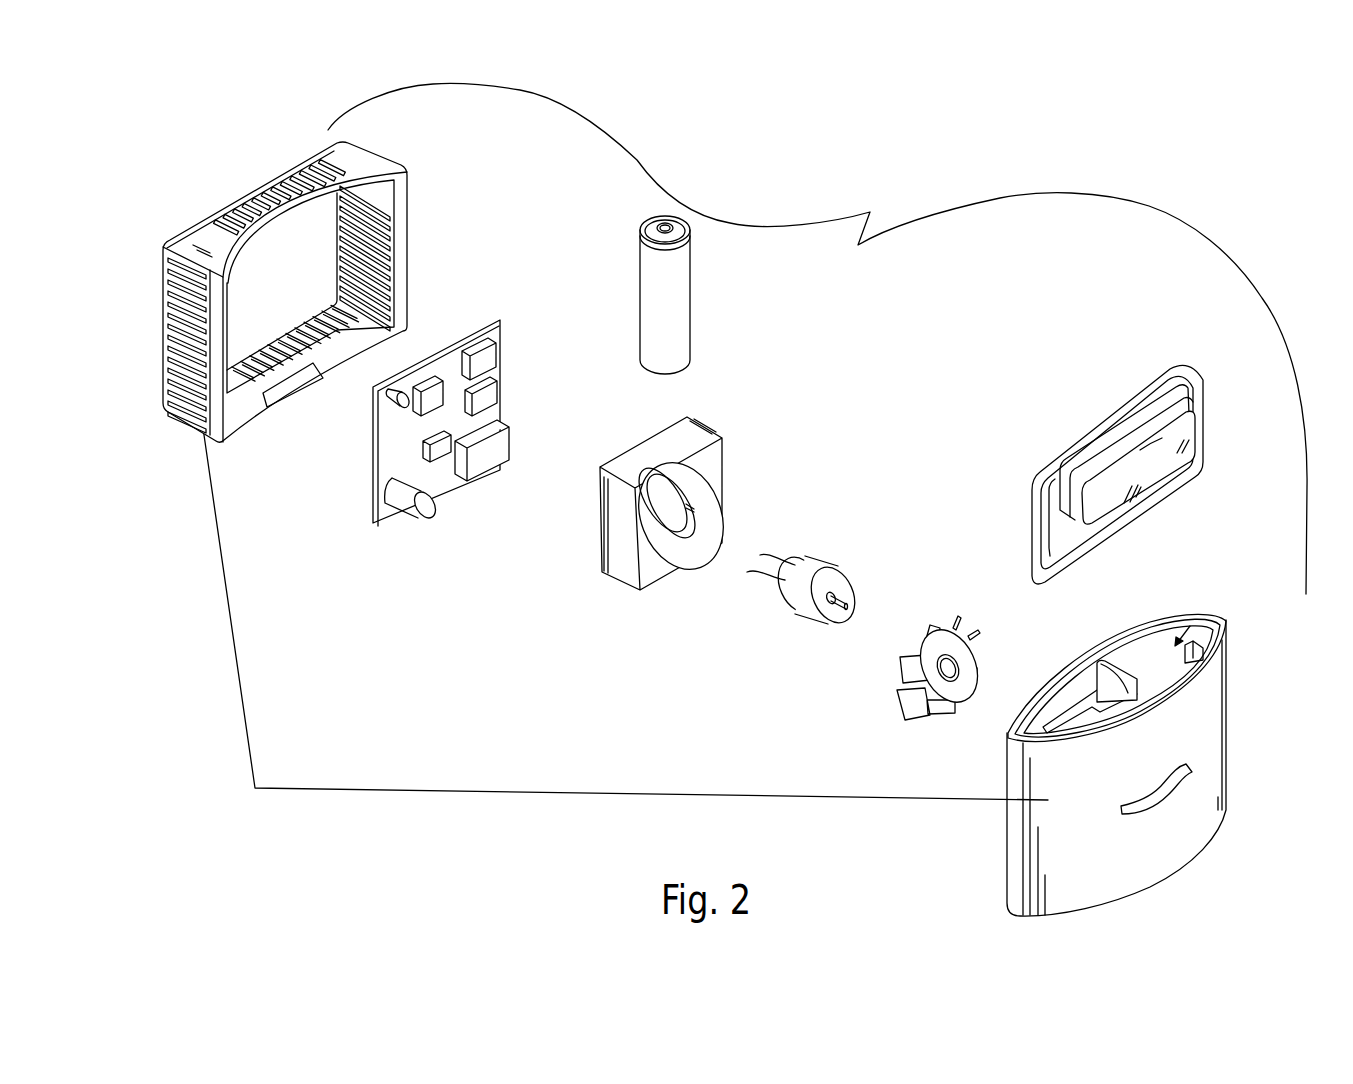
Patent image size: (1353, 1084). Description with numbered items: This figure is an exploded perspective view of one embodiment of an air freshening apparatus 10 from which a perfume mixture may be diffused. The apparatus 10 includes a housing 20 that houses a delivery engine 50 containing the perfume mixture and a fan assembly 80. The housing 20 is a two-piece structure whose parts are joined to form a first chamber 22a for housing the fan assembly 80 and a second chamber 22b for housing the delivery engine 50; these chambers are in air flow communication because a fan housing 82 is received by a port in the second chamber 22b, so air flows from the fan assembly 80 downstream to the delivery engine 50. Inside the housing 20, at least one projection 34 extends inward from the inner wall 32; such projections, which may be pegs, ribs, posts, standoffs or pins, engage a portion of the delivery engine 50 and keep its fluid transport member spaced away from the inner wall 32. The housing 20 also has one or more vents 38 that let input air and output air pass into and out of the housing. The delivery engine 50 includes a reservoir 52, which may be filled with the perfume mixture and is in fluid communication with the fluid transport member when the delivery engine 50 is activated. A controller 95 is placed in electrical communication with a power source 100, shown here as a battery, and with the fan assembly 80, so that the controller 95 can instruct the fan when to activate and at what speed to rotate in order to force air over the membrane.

The apparatus 10 is at (870, 212).
The housing 20 is at (625, 623).
The first chamber 22a is at (247, 282).
The second chamber 22b is at (1200, 616).
The inner wall 32 is at (1167, 675).
The projection 34 is at (1150, 705).
The vent 38 is at (1170, 790).
The delivery engine 50 is at (1066, 396).
The reservoir 52 is at (1100, 503).
The fan assembly 80 is at (937, 733).
The fan housing 82 is at (617, 547).
The controller 95 is at (383, 447).
The power source 100 is at (657, 316).